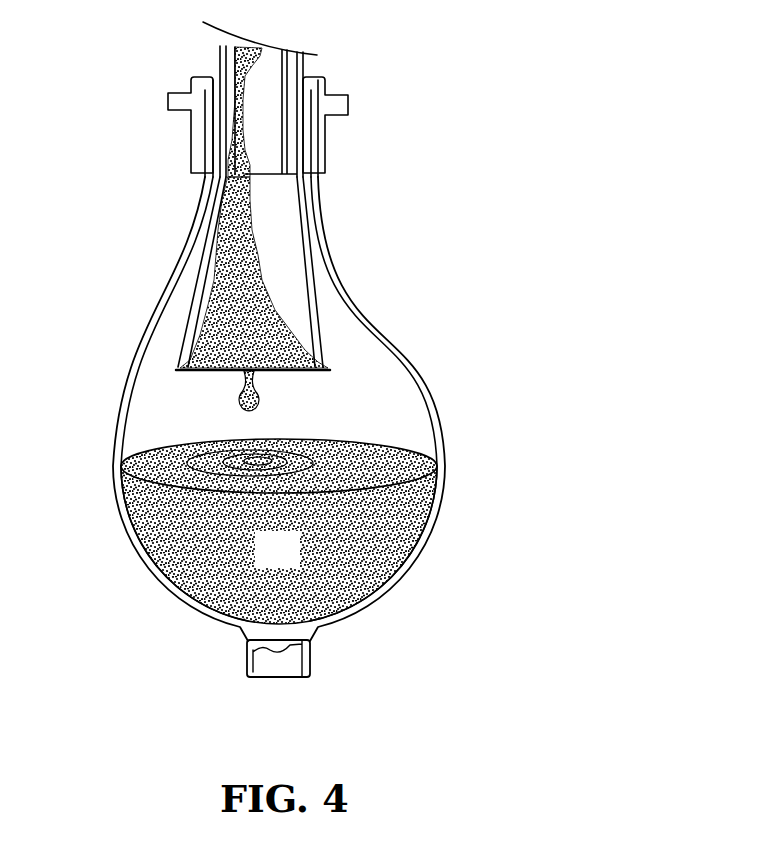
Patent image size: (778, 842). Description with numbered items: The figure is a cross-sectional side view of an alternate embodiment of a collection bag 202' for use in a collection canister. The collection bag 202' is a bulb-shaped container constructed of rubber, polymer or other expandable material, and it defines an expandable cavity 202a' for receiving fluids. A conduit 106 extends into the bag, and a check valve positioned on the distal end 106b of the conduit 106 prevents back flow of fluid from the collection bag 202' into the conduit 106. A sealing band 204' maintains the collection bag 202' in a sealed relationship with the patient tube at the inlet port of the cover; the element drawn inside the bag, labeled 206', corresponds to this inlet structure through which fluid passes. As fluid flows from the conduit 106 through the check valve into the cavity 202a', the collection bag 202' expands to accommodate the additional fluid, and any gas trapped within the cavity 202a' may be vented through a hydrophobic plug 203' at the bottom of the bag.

The conduit 106 is at (299, 62).
The distal end 106b is at (233, 132).
The sealing band 204' is at (306, 125).
The inner cone 206' is at (320, 273).
The collection bag 202' is at (335, 360).
The expandable cavity 202a' is at (279, 497).
The hydrophobic plug 203' is at (334, 651).